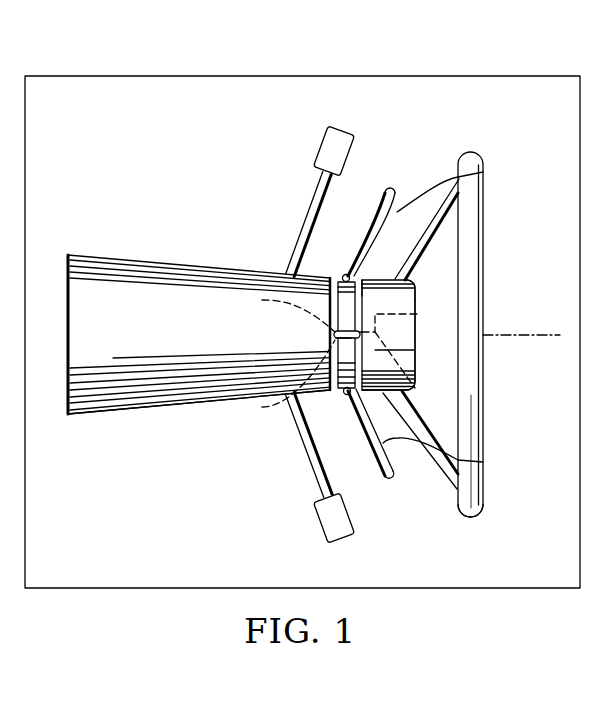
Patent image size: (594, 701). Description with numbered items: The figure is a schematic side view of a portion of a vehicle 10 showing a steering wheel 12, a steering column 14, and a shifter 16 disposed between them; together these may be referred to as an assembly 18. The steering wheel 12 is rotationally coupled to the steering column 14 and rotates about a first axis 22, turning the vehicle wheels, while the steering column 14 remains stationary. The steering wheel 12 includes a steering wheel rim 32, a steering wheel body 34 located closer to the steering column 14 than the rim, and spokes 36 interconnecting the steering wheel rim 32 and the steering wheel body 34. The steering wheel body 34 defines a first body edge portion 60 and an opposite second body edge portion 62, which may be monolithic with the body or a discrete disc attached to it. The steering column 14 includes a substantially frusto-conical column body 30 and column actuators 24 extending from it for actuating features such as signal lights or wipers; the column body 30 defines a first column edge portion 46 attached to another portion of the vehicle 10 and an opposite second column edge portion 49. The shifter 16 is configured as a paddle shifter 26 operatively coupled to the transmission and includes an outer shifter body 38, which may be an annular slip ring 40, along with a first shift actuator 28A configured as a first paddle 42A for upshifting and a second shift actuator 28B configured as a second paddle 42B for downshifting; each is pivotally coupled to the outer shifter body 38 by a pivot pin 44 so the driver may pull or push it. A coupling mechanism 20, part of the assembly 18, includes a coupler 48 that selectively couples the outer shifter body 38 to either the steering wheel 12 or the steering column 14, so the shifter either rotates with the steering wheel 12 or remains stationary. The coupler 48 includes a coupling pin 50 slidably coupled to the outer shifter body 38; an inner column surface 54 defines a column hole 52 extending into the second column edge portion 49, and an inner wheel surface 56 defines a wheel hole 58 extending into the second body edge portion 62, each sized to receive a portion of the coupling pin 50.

The vehicle 10 is at (312, 68).
The steering wheel 12 is at (481, 156).
The steering column 14 is at (153, 259).
The shifter 16 is at (372, 199).
The assembly 18 is at (213, 161).
The coupling mechanism 20 is at (380, 393).
The first axis 22 is at (514, 333).
The column actuators 24 is at (318, 142).
The paddle shifter 26 is at (376, 462).
The first shift actuator 28A is at (397, 210).
The second shift actuator 28B is at (398, 468).
The column body 30 is at (154, 411).
The steering wheel rim 32 is at (476, 517).
The steering wheel body 34 is at (413, 353).
The spokes 36 is at (433, 230).
The outer shifter body 38 is at (420, 252).
The slip ring 40 is at (338, 281).
The first paddle 42A is at (483, 172).
The second paddle 42B is at (483, 462).
The pivot pin 44 is at (346, 274).
The first column edge portion 46 is at (67, 333).
The coupler 48 is at (343, 330).
The second column edge portion 49 is at (346, 354).
The coupling pin 50 is at (341, 341).
The column hole 52 is at (284, 310).
The inner column surface 54 is at (276, 380).
The inner wheel surface 56 is at (418, 314).
The wheel hole 58 is at (415, 388).
The first body edge portion 60 is at (417, 340).
The second body edge portion 62 is at (365, 292).